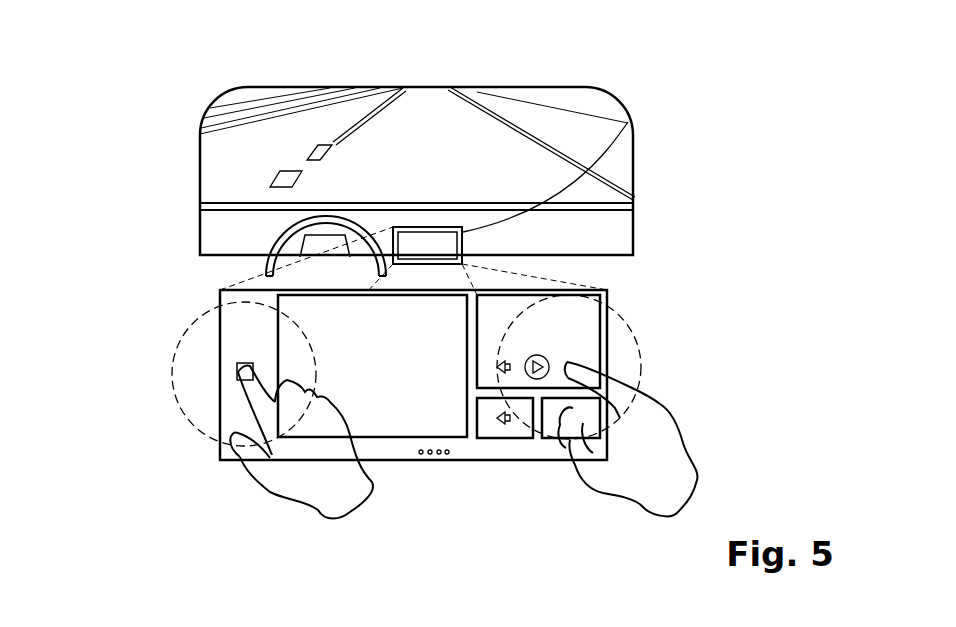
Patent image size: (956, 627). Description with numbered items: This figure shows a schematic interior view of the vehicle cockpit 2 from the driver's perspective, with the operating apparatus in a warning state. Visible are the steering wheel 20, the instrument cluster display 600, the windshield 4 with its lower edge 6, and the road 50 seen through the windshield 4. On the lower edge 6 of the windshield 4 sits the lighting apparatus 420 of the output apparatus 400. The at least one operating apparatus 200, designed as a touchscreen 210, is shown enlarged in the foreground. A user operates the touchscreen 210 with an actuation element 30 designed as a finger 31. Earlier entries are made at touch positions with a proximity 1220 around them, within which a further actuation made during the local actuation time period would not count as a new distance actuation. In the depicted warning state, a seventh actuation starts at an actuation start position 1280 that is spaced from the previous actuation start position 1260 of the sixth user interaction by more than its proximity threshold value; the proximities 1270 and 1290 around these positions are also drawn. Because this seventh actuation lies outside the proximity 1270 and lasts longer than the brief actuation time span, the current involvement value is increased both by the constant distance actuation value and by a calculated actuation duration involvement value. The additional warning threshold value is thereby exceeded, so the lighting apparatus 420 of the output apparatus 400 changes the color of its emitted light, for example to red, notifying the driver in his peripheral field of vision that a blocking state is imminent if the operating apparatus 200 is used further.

The vehicle cockpit 2 is at (706, 233).
The windshield 4 is at (417, 153).
The edge 6 is at (362, 203).
The steering wheel 20 is at (266, 266).
The actuation element 30 is at (439, 453).
The finger 31 is at (245, 390).
The road 50 is at (628, 122).
The operating apparatus 200 is at (538, 170).
The touchscreen 210 is at (400, 412).
The output apparatus 400 is at (457, 104).
The lighting apparatus 420 is at (407, 203).
The instrument cluster display 600 is at (268, 243).
The proximity (first touch position) 1220 is at (177, 398).
The previous actuation start position (sixth user interaction) 1260 is at (640, 402).
The proximity (sixth user interaction) 1270 is at (643, 355).
The actuation start position (seventh actuation) 1280 is at (235, 366).
The proximity (seventh actuation) 1290 is at (193, 326).